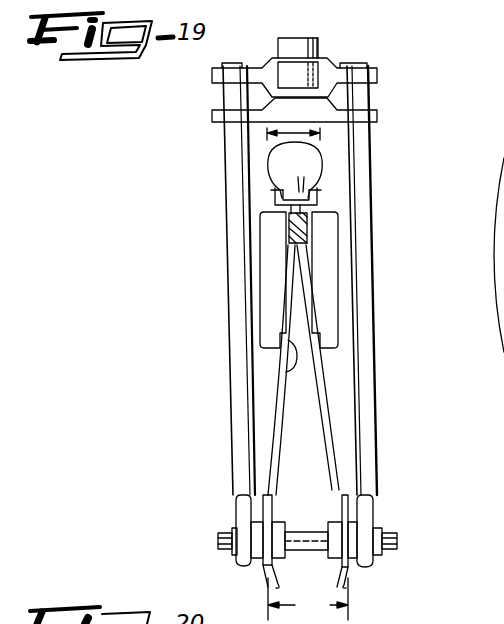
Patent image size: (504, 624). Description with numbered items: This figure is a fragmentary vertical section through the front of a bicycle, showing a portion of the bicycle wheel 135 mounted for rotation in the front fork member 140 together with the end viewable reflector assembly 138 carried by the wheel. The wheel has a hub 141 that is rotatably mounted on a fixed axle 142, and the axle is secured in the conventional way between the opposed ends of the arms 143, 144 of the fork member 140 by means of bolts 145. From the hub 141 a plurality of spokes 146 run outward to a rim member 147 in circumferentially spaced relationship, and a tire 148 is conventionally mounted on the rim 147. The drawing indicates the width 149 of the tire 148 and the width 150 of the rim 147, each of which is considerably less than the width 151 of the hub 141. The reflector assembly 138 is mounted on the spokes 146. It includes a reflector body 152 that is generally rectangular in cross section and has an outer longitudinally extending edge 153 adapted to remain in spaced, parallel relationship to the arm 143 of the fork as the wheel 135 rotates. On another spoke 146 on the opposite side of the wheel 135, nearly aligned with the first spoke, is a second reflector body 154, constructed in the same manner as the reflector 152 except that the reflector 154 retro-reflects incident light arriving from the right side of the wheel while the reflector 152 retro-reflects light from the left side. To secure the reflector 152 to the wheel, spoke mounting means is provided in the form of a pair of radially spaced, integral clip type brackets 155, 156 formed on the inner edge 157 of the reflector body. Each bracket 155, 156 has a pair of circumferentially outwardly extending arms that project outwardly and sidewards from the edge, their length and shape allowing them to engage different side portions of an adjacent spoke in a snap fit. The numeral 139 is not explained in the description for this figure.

In FIG. 19, the bicycle wheel 135 is at (274, 432).
In FIG. 19, the reflector assembly 138 is at (248, 227).
In FIG. 20, the frame 139 is at (419, 615).
In FIG. 19, the front fork member 140 is at (224, 146).
In FIG. 19, the hub 141 is at (302, 553).
In FIG. 19, the fixed axle 142 is at (394, 532).
In FIG. 19, the arm 143 is at (236, 498).
In FIG. 19, the arm 144 is at (378, 492).
In FIG. 19, the bolts 145 is at (393, 550).
In FIG. 19, the spokes 146 is at (331, 450).
In FIG. 19, the rim member 147 is at (318, 200).
In FIG. 19, the tire 148 is at (323, 163).
In FIG. 19, the width of tire 149 is at (296, 120).
In FIG. 19, the width of rim 150 is at (297, 170).
In FIG. 19, the width of hub 151 is at (308, 599).
In FIG. 19, the reflector body 152 is at (273, 298).
In FIG. 19, the outer longitudinally extending edge 153 is at (282, 330).
In FIG. 19, the second reflector body 154 is at (337, 259).
In FIG. 19, the clip type bracket 155 is at (291, 244).
In FIG. 19, the clip type bracket 156 is at (288, 366).
In FIG. 19, the inner edge 157 is at (291, 268).